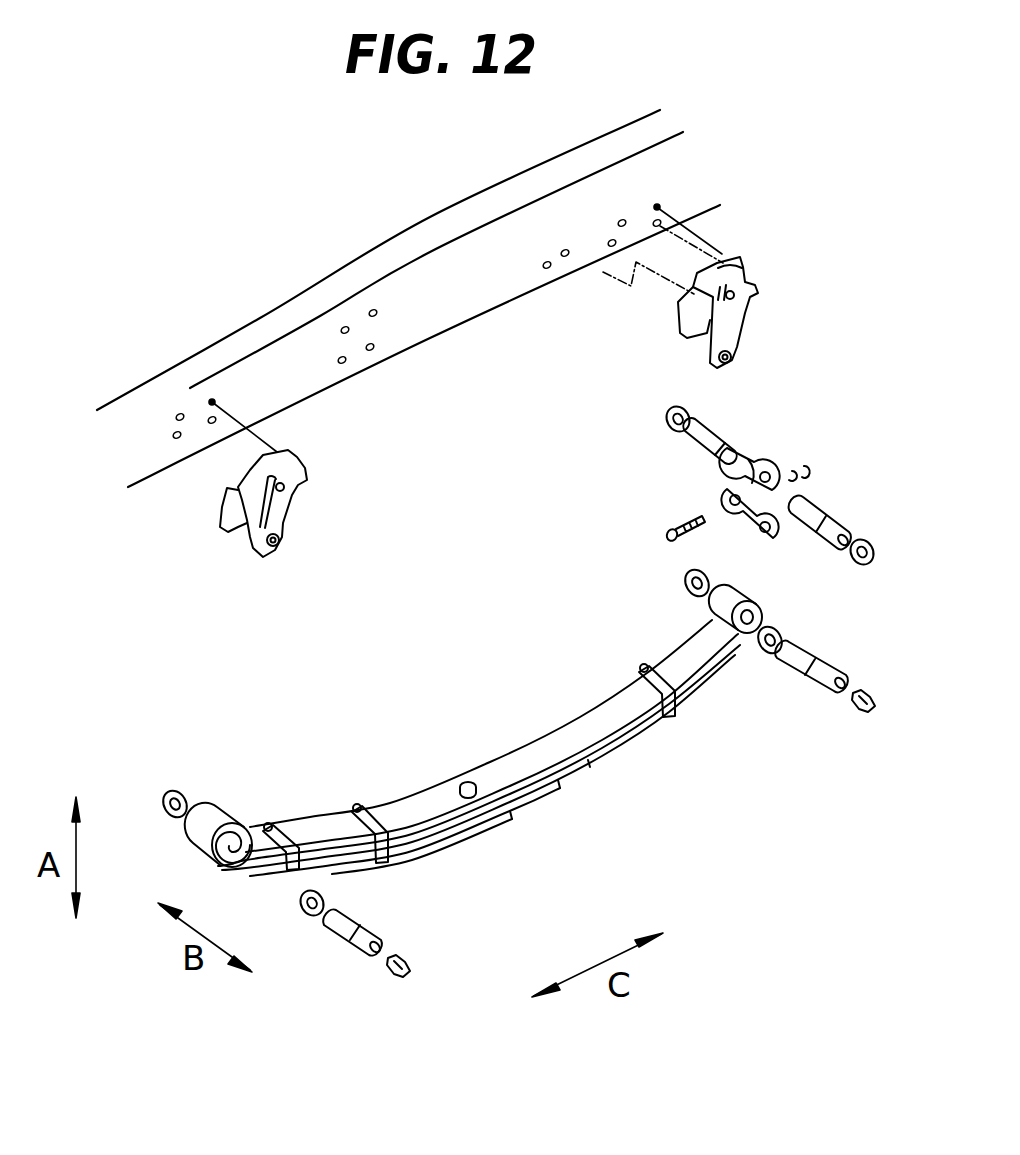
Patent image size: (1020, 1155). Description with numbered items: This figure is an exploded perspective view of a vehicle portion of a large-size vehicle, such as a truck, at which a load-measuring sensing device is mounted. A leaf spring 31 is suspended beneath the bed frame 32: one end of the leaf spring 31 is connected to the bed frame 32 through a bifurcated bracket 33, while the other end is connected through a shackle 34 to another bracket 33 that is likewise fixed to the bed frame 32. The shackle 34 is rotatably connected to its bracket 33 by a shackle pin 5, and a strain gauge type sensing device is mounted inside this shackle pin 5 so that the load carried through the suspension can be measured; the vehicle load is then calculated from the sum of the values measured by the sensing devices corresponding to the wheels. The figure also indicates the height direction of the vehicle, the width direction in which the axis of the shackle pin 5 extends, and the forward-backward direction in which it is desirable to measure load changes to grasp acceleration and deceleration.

The shackle pin 5 is at (833, 515).
The leaf spring 31 is at (603, 758).
The bed frame 32 is at (325, 292).
The bracket 33 is at (285, 503).
The shackle 34 is at (722, 488).